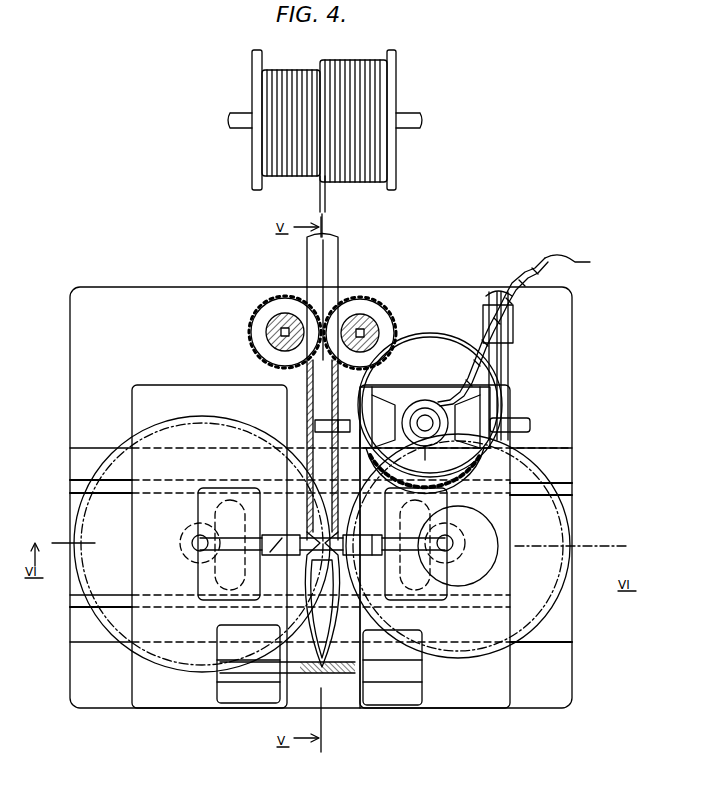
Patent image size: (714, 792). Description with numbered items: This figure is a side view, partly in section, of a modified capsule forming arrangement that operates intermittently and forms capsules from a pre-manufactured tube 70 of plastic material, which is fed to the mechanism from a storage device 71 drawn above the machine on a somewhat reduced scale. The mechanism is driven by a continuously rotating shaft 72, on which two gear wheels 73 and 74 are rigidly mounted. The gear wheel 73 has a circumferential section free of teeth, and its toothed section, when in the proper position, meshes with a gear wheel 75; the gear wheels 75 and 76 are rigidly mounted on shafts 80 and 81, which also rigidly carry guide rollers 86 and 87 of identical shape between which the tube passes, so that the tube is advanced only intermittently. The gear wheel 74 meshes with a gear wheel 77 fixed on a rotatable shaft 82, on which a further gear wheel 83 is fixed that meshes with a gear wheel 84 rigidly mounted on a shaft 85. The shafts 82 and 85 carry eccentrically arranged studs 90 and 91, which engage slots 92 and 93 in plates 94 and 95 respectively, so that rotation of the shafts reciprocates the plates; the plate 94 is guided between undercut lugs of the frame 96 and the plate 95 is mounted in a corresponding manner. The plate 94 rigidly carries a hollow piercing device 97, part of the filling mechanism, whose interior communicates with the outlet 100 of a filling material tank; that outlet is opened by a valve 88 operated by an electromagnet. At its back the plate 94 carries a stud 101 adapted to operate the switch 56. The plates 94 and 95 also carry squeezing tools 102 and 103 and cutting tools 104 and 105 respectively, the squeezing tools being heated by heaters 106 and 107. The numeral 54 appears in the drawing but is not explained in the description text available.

The lever 54 is at (578, 262).
The switch 56 is at (503, 350).
The pre-manufactured tube 70 is at (327, 203).
The storage device 71 is at (394, 76).
The rotatable shaft 72 is at (505, 392).
The gear wheel 73 is at (500, 292).
The gear wheel 74 is at (520, 486).
The gear wheel 75 is at (388, 330).
The gear wheel 76 is at (258, 296).
The gear wheel 77 is at (515, 528).
The shaft 80 is at (370, 323).
The shaft 81 is at (268, 318).
The rotatable shaft 82 is at (625, 550).
The gear wheel 83 is at (540, 600).
The gear wheel 84 is at (110, 622).
The shaft 85 is at (200, 540).
The guide roller 86 is at (432, 334).
The guide roller 87 is at (288, 318).
The valve 88 is at (497, 447).
The stud 90 is at (470, 560).
The stud 91 is at (213, 530).
The slot 92 is at (578, 660).
The slot 93 is at (215, 562).
The plate 94 is at (493, 690).
The plate 95 is at (147, 690).
The frame 96 is at (542, 680).
The hollow piercing device 97 is at (327, 422).
The outlet 100 is at (532, 426).
The stud 101 is at (515, 398).
The squeezing tool 102 is at (352, 552).
The squeezing tool 103 is at (300, 558).
The cutting tool 104 is at (335, 674).
The cutting tool 105 is at (310, 666).
The heater 106 is at (355, 548).
The heater 107 is at (242, 590).